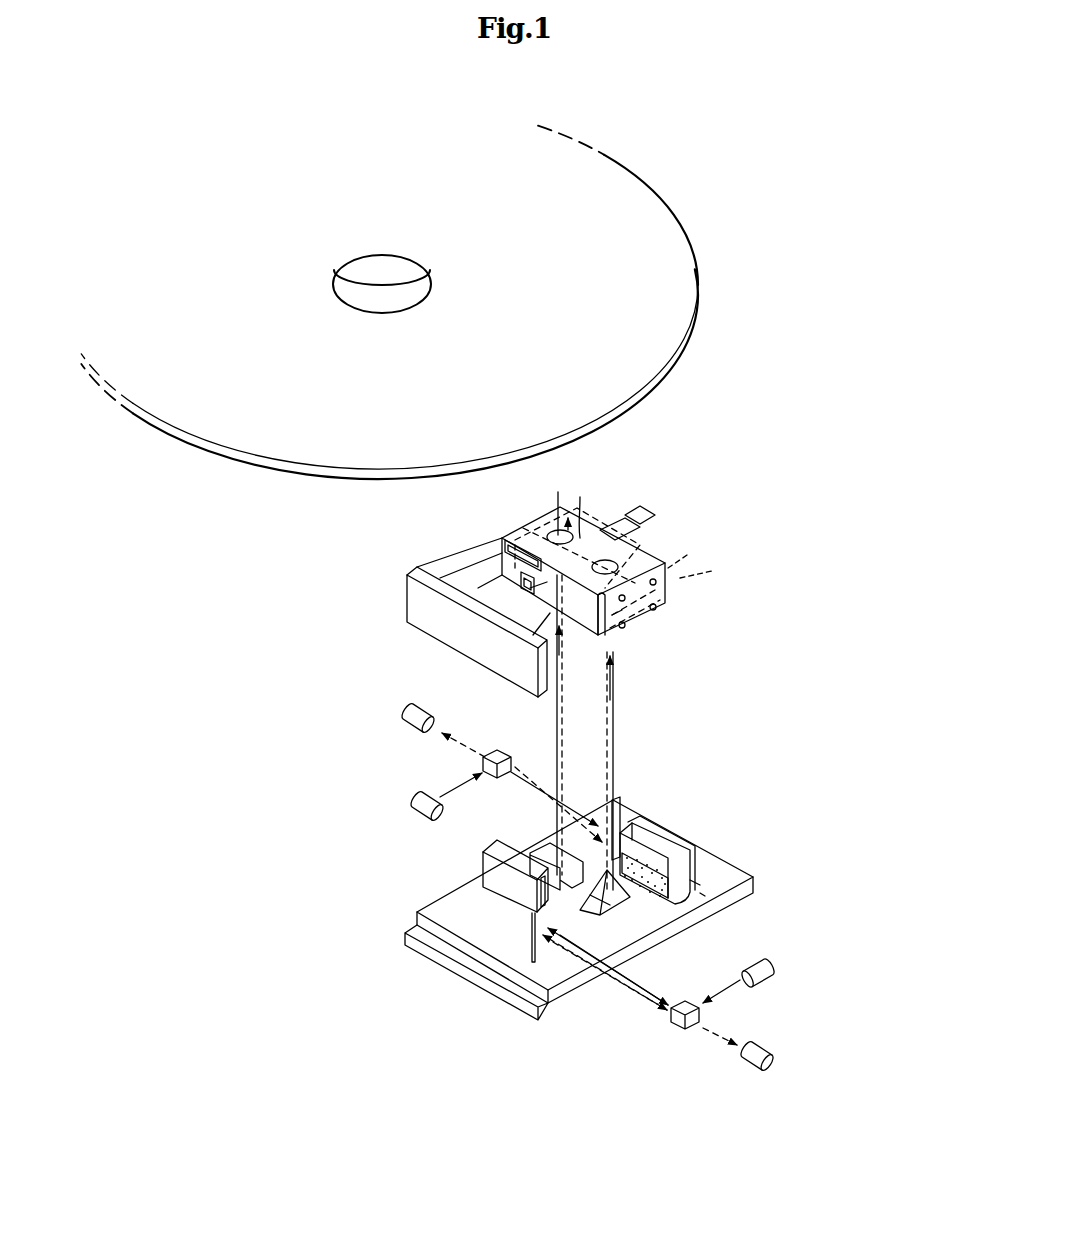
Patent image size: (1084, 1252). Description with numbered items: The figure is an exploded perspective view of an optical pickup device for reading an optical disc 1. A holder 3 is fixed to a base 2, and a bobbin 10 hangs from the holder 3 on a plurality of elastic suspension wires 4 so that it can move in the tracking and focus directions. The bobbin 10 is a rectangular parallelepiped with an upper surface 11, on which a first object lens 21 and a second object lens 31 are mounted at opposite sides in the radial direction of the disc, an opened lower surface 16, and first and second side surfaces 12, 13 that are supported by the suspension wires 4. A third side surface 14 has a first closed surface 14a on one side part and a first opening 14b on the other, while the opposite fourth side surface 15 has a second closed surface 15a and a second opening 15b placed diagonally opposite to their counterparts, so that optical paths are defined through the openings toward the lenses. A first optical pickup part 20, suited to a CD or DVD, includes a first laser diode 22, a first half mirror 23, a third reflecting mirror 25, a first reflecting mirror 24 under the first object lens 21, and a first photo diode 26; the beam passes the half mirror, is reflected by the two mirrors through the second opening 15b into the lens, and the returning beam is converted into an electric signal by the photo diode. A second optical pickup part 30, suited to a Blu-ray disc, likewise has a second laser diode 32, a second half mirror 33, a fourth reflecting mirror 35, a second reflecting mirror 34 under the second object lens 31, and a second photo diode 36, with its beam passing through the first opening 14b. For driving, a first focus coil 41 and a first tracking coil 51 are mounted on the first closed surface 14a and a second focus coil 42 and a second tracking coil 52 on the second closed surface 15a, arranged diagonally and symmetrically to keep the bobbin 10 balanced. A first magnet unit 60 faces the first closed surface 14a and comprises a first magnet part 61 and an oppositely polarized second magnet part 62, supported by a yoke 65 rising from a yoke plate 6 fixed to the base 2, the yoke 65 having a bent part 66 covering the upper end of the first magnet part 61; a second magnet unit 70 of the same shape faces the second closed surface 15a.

The optical disc 1 is at (682, 318).
The base 2 is at (735, 865).
The holder 3 is at (417, 608).
The suspension wires 4 is at (448, 572).
The yoke plate 6 is at (605, 935).
The bobbin 10 is at (762, 534).
The upper surface 11 is at (638, 554).
The first side surface 12 is at (662, 598).
The second side surface 13 is at (523, 533).
The third side surface 14 is at (605, 463).
The first closed surface 14a is at (628, 524).
The first opening 14b is at (596, 502).
The fourth side surface 15 is at (490, 680).
The second closed surface 15a is at (530, 588).
The second opening 15b is at (533, 635).
The opened lower surface 16 is at (648, 620).
The first optical pickup part 20 is at (694, 1038).
The first object lens 21 is at (640, 535).
The first laser diode 22 is at (768, 976).
The first half mirror 23 is at (672, 1020).
The first reflecting mirror 24 is at (620, 912).
The third reflecting mirror 25 is at (531, 935).
The first photo diode 26 is at (760, 1050).
The second optical pickup part 30 is at (425, 765).
The second object lens 31 is at (558, 509).
The second laser diode 32 is at (437, 808).
The second half mirror 33 is at (506, 760).
The second reflecting mirror 34 is at (548, 855).
The fourth reflecting mirror 35 is at (618, 815).
The second photo diode 36 is at (435, 718).
The first focus coil 41 is at (697, 551).
The second focus coil 42 is at (513, 587).
The first tracking coil 51 is at (681, 592).
The second tracking coil 52 is at (470, 562).
The first magnet unit 60 is at (660, 830).
The first magnet part 61 is at (690, 880).
The second magnet part 62 is at (680, 893).
The yoke 65 is at (690, 858).
The bent part 66 is at (665, 845).
The second magnet unit 70 is at (513, 882).